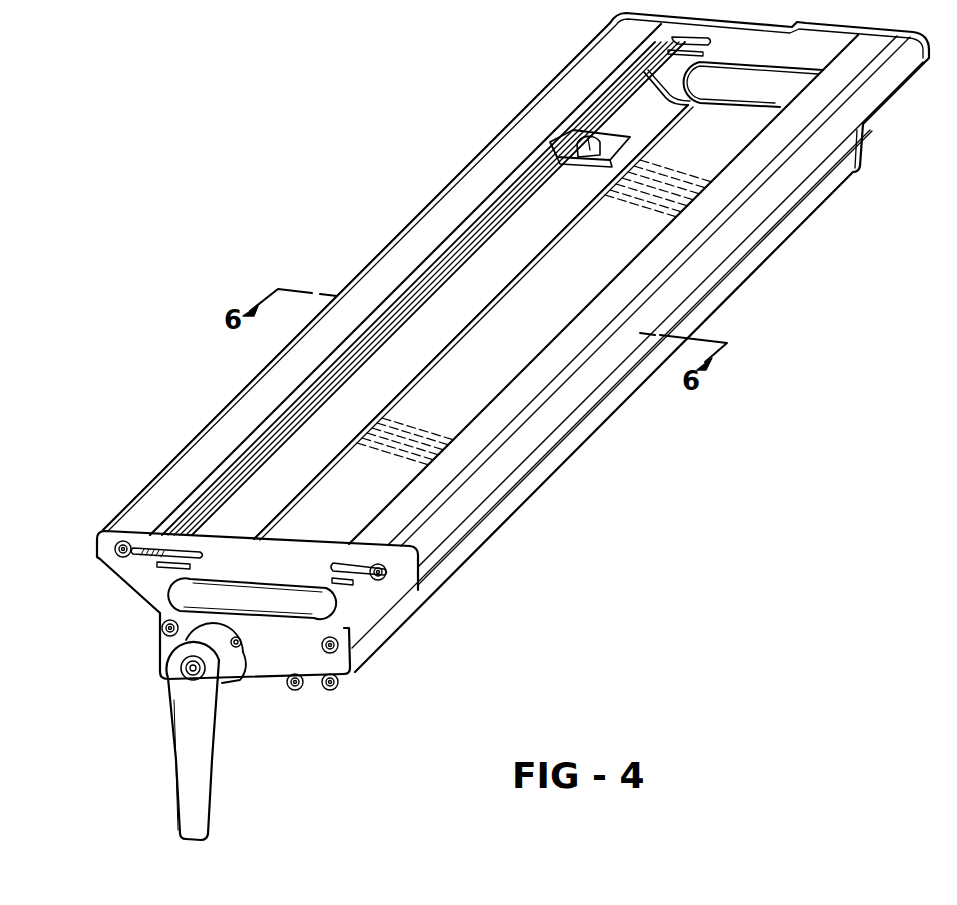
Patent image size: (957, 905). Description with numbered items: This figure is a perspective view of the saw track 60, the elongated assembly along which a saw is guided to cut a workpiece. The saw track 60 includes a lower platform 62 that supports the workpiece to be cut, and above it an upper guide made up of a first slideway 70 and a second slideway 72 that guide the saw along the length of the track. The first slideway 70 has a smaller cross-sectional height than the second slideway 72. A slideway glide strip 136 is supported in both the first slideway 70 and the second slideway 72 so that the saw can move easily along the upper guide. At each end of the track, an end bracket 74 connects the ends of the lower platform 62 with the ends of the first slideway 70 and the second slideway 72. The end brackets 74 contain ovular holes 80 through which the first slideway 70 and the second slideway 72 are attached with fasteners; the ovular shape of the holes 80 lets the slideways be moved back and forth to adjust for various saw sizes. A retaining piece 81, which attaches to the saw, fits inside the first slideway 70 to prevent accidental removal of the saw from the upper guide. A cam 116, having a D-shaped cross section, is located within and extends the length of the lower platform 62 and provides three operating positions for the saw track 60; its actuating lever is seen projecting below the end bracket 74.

The saw track 60 is at (463, 138).
The lower platform 62 is at (317, 477).
The first slideway 70 is at (373, 264).
The second slideway 72 is at (700, 260).
The end brackets 74 is at (362, 594).
The ovular holes 80 is at (143, 552).
The retaining piece 81 is at (591, 144).
The cam 116 is at (198, 818).
The slideway glide strip 136 is at (538, 190).